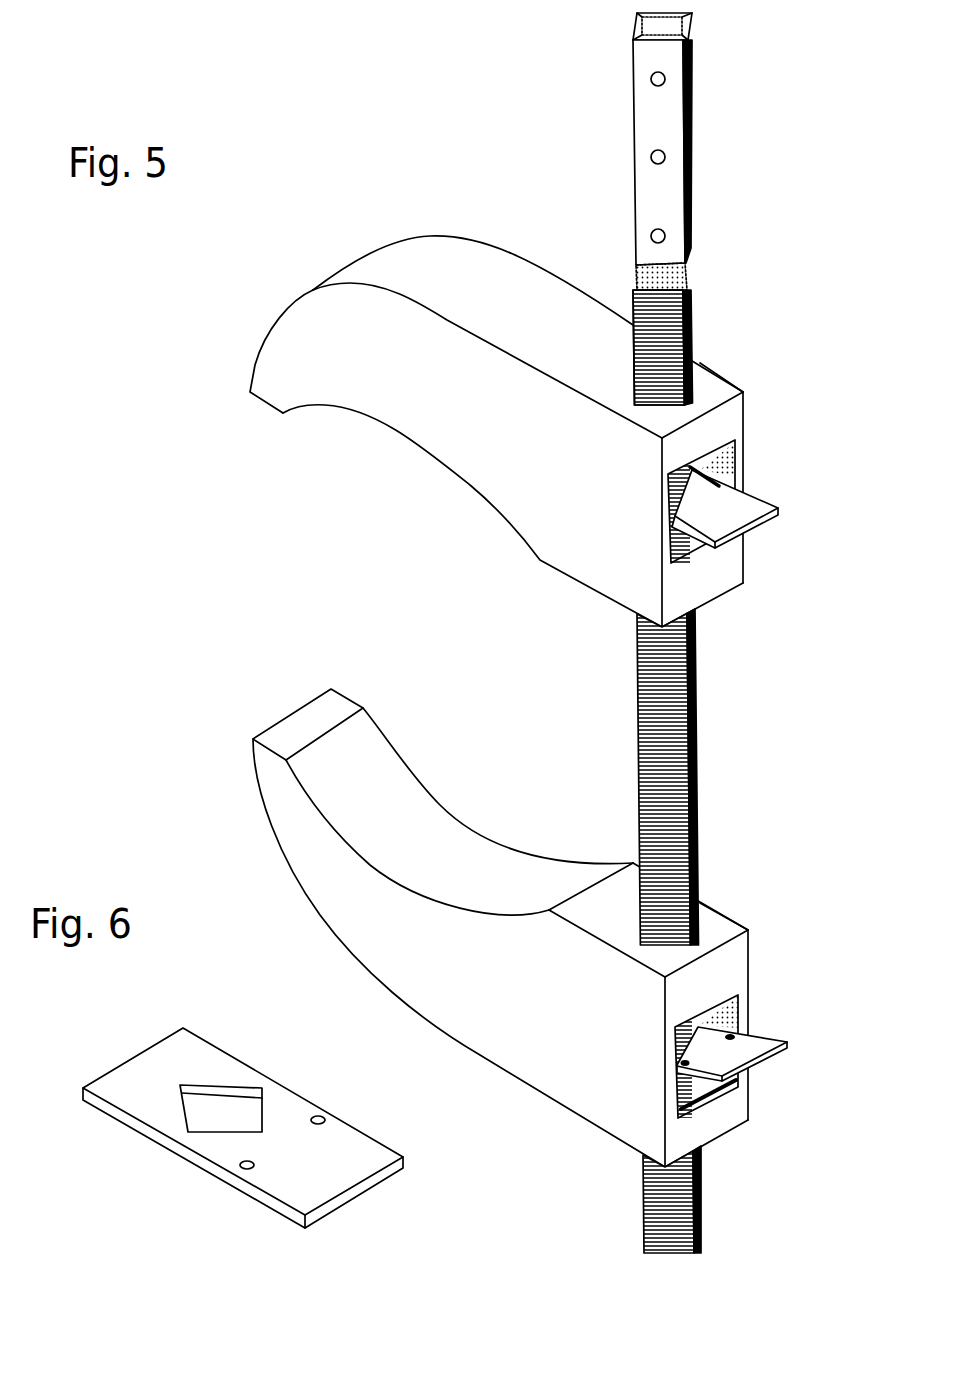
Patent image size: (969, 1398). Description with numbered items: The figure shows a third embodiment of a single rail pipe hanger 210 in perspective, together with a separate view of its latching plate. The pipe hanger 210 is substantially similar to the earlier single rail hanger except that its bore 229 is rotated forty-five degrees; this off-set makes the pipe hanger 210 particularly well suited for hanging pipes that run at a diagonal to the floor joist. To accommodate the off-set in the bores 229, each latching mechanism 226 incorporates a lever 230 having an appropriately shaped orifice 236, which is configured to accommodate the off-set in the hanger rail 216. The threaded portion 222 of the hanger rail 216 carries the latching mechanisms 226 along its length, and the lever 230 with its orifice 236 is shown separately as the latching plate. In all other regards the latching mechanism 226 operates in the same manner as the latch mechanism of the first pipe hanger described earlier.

In FIG. 5, the single rail pipe hanger 210 is at (510, 205).
In FIG. 5, the hanger rail 216 is at (663, 123).
In FIG. 5, the threaded rod 222 is at (670, 762).
In FIG. 5, the latching mechanism 226 is at (763, 462).
In FIG. 5, the bore 229 is at (700, 363).
In FIG. 5, the lever 230 is at (763, 518).
In FIG. 6, the lever 230 is at (138, 1053).
In FIG. 6, the orifice 236 is at (225, 1112).